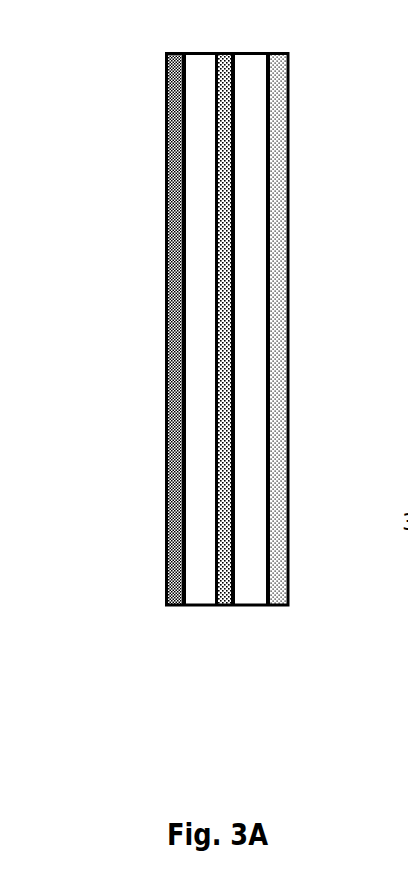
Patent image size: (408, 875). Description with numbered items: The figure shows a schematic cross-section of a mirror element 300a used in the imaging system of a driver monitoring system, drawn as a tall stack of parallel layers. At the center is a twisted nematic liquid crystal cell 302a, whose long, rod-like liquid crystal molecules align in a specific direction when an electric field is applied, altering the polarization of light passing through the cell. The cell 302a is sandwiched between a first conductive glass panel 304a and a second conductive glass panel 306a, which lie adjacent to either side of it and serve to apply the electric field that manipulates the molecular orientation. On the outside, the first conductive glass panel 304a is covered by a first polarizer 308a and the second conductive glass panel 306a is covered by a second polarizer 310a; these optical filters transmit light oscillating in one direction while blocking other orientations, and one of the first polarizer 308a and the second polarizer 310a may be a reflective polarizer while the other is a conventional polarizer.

The mirror element 300a is at (145, 98).
The twisted nematic (TN) liquid crystal cell 302a is at (225, 595).
The first conductive glass panel 304a is at (193, 595).
The second conductive glass panel 306a is at (246, 595).
The first polarizer 308a is at (176, 440).
The second polarizer 310a is at (279, 595).